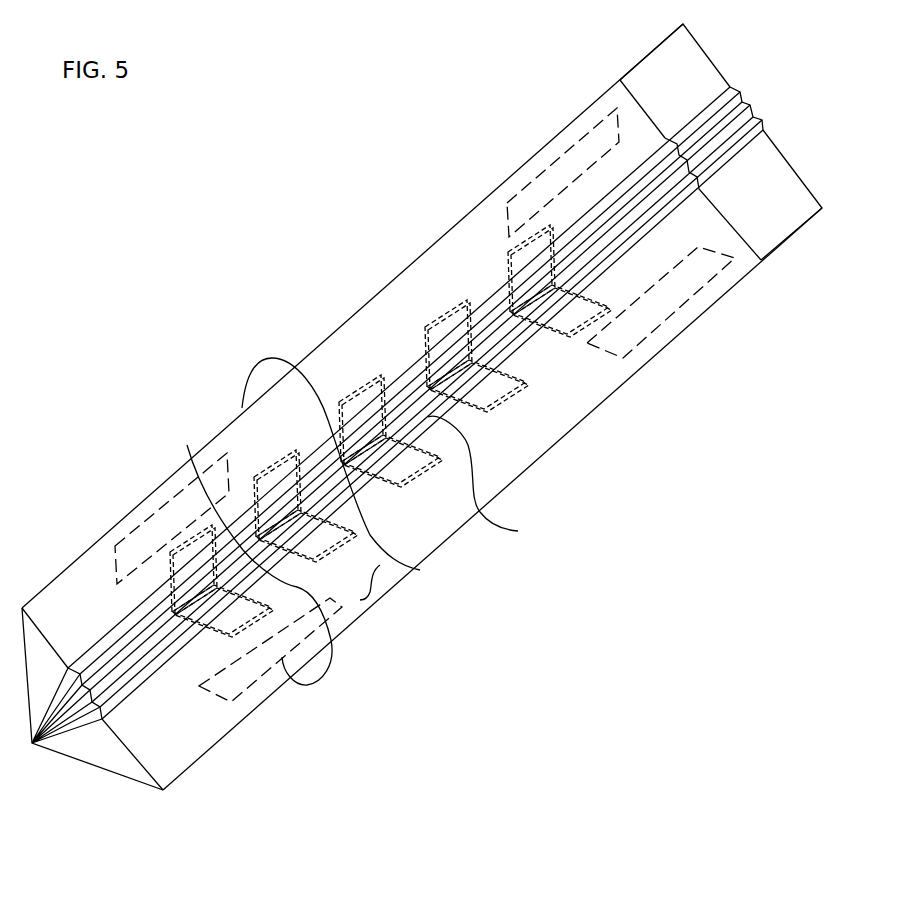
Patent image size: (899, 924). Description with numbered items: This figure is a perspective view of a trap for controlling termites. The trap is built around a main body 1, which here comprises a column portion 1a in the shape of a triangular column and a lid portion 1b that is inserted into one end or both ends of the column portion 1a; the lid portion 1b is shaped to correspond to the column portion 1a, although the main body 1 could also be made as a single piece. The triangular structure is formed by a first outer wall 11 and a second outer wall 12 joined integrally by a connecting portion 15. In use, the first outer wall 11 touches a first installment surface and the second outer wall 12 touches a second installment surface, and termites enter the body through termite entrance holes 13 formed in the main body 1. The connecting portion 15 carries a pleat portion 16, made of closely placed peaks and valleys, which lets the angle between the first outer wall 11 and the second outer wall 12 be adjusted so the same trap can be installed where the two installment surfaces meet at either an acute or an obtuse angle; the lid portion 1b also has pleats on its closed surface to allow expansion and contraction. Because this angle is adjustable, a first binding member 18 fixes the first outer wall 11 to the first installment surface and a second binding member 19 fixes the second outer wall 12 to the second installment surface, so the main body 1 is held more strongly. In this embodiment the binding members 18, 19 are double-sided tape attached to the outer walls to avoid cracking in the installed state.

The main body 1 is at (324, 846).
The column portion 1a is at (270, 698).
The lid portion 1b is at (213, 753).
The first outer wall 11 is at (251, 550).
The second outer wall 12 is at (347, 480).
The termite entrance holes 13 is at (522, 237).
The connecting portion 15 is at (382, 582).
The pleat portion 16 is at (415, 403).
The first binding member 18 is at (291, 676).
The second binding member 19 is at (172, 502).